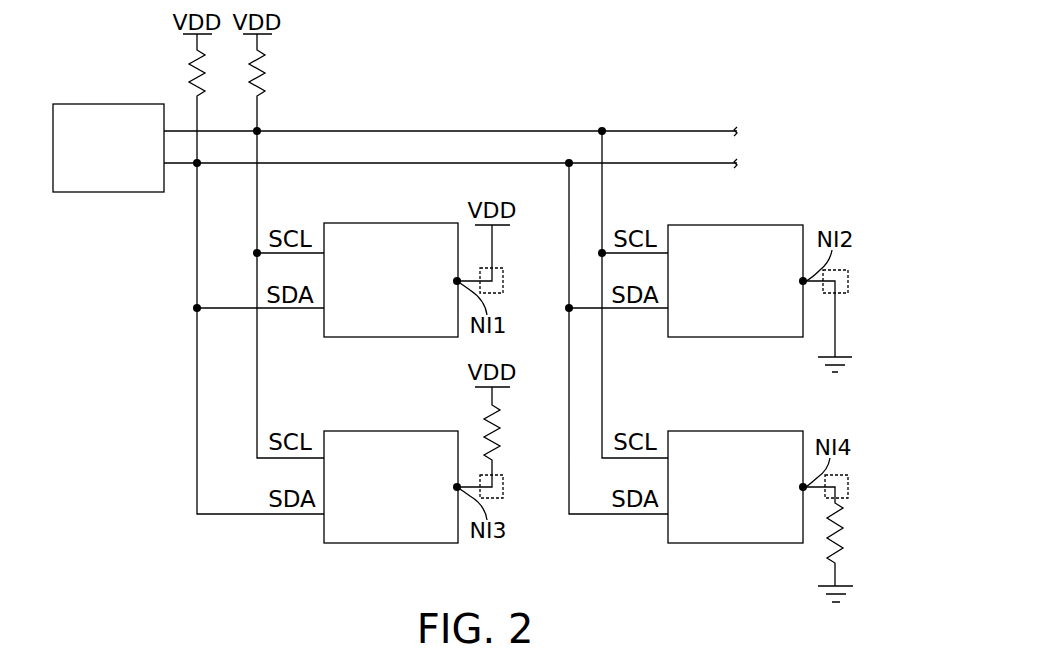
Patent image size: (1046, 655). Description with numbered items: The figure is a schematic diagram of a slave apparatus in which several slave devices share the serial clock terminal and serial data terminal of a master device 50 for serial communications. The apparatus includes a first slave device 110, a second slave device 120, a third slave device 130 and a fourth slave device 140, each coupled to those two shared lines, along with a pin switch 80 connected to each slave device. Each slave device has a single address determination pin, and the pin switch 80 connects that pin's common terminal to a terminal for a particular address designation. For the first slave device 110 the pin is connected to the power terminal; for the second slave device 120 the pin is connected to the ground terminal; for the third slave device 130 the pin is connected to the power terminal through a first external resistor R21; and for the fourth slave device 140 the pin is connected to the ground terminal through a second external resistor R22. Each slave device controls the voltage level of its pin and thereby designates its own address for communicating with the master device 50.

The master device 50 is at (105, 103).
The first slave device 110 is at (391, 222).
The second slave device 120 is at (771, 224).
The third slave device 130 is at (391, 430).
The fourth slave device 140 is at (771, 430).
The pin switch 80 is at (688, 389).
The first external resistor R21 is at (503, 437).
The second external resistor R22 is at (848, 544).